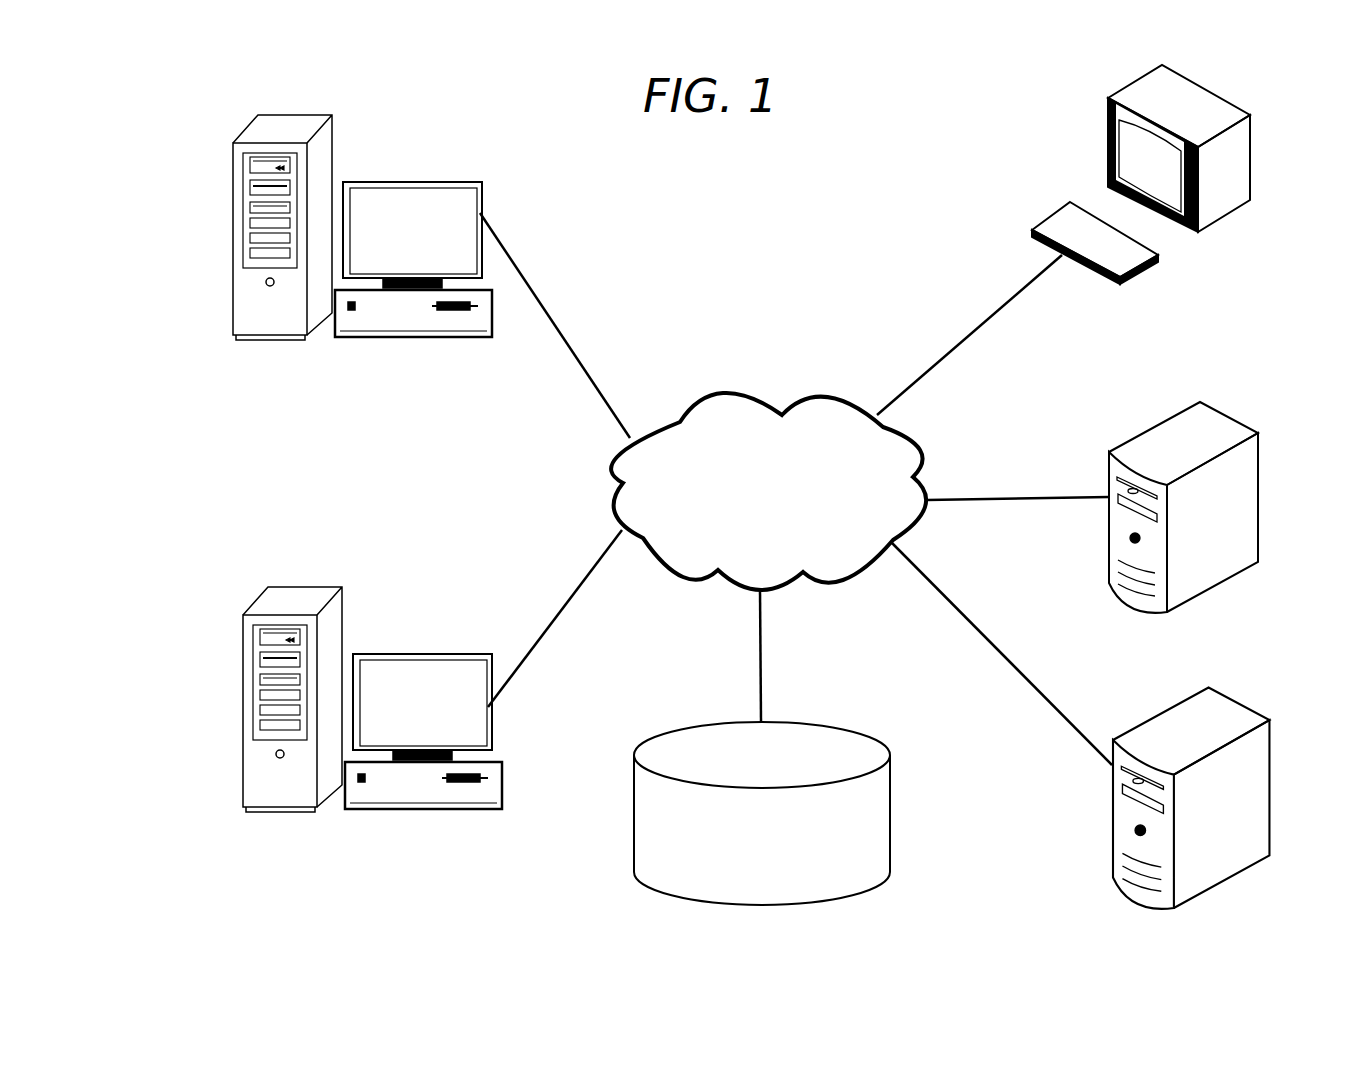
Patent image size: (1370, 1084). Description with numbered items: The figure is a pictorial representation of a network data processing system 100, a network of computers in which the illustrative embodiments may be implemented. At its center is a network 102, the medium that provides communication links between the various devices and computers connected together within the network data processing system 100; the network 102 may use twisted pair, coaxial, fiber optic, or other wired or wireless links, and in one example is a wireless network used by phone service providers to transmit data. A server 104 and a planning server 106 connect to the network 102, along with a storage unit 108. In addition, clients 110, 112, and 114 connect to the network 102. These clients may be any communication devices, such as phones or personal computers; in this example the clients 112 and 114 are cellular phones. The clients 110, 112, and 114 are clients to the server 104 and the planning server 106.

The network data processing system 100 is at (768, 249).
The network 102 is at (796, 489).
The server 104 is at (233, 225).
The planning server 106 is at (242, 700).
The storage unit 108 is at (762, 813).
The client 110 is at (1250, 158).
The client 112 is at (1258, 503).
The client 114 is at (1272, 785).